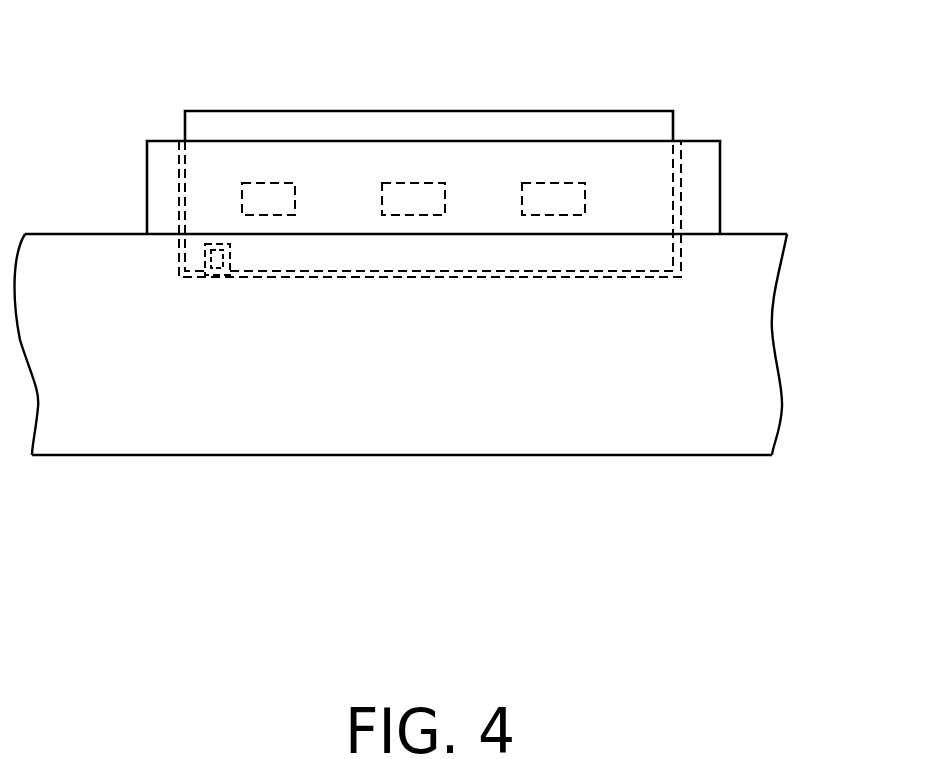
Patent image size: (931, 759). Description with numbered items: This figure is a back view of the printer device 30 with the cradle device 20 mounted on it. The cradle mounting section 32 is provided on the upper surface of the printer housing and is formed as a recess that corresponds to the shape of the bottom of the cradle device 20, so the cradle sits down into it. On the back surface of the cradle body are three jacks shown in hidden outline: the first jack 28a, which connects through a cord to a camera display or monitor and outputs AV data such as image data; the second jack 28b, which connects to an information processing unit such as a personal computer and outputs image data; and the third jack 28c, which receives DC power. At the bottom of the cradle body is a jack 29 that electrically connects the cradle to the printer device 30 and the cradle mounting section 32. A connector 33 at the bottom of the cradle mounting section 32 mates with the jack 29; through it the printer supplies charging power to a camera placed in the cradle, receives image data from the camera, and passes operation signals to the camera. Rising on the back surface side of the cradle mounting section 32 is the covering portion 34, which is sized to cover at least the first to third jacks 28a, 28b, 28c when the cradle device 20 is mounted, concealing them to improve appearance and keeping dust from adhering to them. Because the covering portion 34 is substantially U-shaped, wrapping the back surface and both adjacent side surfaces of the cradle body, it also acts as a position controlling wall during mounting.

The cradle device 20 is at (676, 110).
The first jack 28a is at (551, 183).
The second jack 28b is at (415, 183).
The third jack 28c is at (262, 183).
The jack 29 is at (198, 256).
The printer device 30 is at (615, 438).
The cradle mounting section 32 is at (682, 263).
The connector 33 is at (215, 272).
The covering portion 34 is at (710, 185).